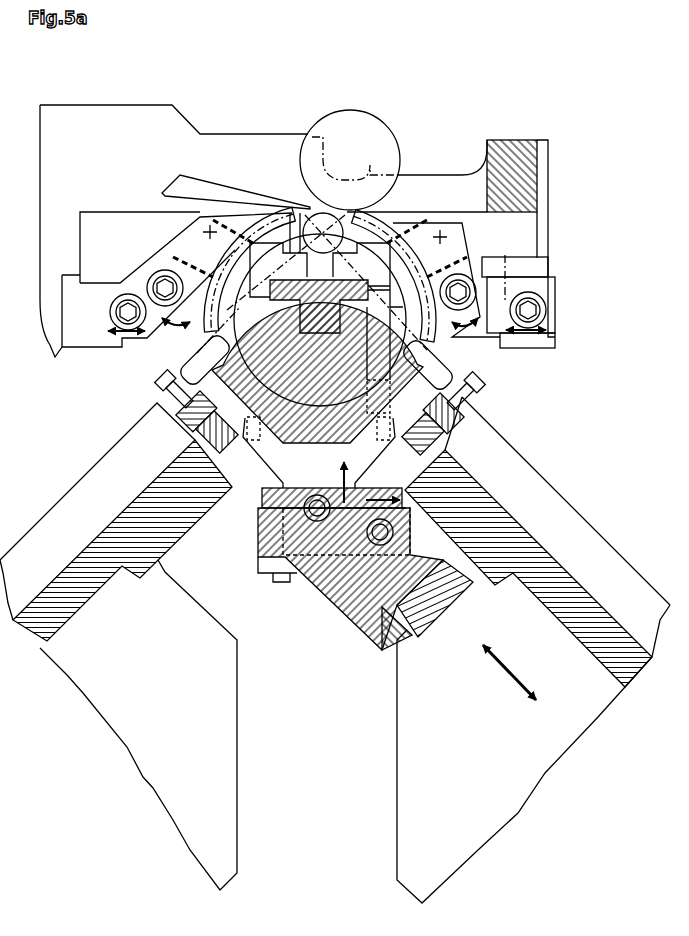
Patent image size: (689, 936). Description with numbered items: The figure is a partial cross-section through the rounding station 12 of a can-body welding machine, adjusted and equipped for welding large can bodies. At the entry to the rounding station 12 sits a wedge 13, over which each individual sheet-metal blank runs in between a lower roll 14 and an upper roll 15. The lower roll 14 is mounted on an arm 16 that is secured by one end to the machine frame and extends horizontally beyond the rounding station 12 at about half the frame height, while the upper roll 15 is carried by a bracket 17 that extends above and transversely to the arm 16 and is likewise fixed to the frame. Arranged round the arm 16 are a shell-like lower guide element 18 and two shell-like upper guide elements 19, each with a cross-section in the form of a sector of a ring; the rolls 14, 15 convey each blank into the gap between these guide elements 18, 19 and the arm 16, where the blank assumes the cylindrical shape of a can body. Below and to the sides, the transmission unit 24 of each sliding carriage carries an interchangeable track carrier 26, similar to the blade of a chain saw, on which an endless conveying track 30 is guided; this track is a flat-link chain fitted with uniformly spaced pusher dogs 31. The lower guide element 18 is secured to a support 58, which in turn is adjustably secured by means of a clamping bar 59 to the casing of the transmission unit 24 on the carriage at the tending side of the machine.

The rounding station 12 is at (411, 165).
The wedge 13 is at (212, 192).
The lower roll 14 is at (312, 215).
The upper roll 15 is at (342, 122).
The arm 16 is at (313, 334).
The bracket 17 is at (70, 118).
The lower guide element 18 is at (303, 430).
The upper guide elements 19 is at (220, 260).
The transmission unit 24 is at (143, 781).
The track carrier 26 is at (90, 540).
The endless conveying track 30 is at (167, 390).
The pusher dogs 31 is at (207, 358).
The support 58 is at (328, 478).
The clamping bar 59 is at (430, 592).